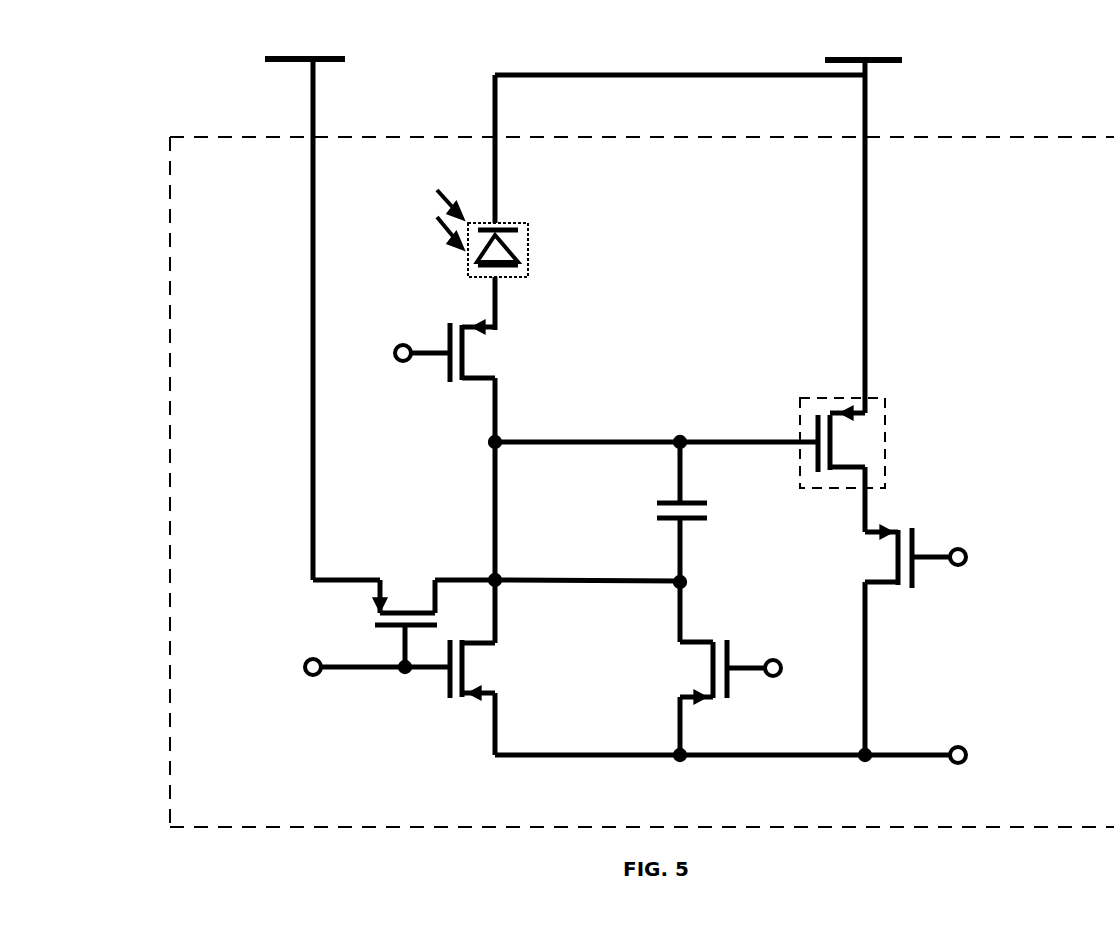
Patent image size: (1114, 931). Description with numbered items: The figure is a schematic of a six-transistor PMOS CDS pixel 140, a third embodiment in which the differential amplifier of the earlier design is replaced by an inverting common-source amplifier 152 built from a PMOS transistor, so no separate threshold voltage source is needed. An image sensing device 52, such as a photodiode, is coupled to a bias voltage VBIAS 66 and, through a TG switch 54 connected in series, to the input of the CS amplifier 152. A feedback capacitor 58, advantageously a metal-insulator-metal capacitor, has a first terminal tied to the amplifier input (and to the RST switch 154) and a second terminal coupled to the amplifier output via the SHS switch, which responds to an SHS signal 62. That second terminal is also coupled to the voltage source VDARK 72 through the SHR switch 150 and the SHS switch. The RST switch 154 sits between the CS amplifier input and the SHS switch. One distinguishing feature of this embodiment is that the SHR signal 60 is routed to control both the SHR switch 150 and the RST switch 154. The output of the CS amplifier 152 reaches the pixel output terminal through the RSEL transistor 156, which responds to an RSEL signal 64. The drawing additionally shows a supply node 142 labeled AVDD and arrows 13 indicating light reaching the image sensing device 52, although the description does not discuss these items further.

The PMOS CDS pixel 140 is at (642, 482).
The voltage source VDARK 72 is at (317, 300).
The AVDD analog supply voltage 142 is at (698, 215).
The incident light 13 is at (400, 228).
The image sensing device 52 is at (530, 222).
The TG switch 54 is at (385, 366).
The feedback capacitor 58 is at (581, 502).
The SHR switch 150 is at (406, 582).
The inverting CS amplifier 152 is at (890, 395).
The RST switch 154 is at (505, 669).
The SHR signal 60 is at (240, 655).
The SHS signal 62 is at (815, 658).
The RSEL transistor 156 is at (857, 554).
The RSEL signal 64 is at (1055, 536).
The bias voltage VBIAS 66 is at (1052, 743).